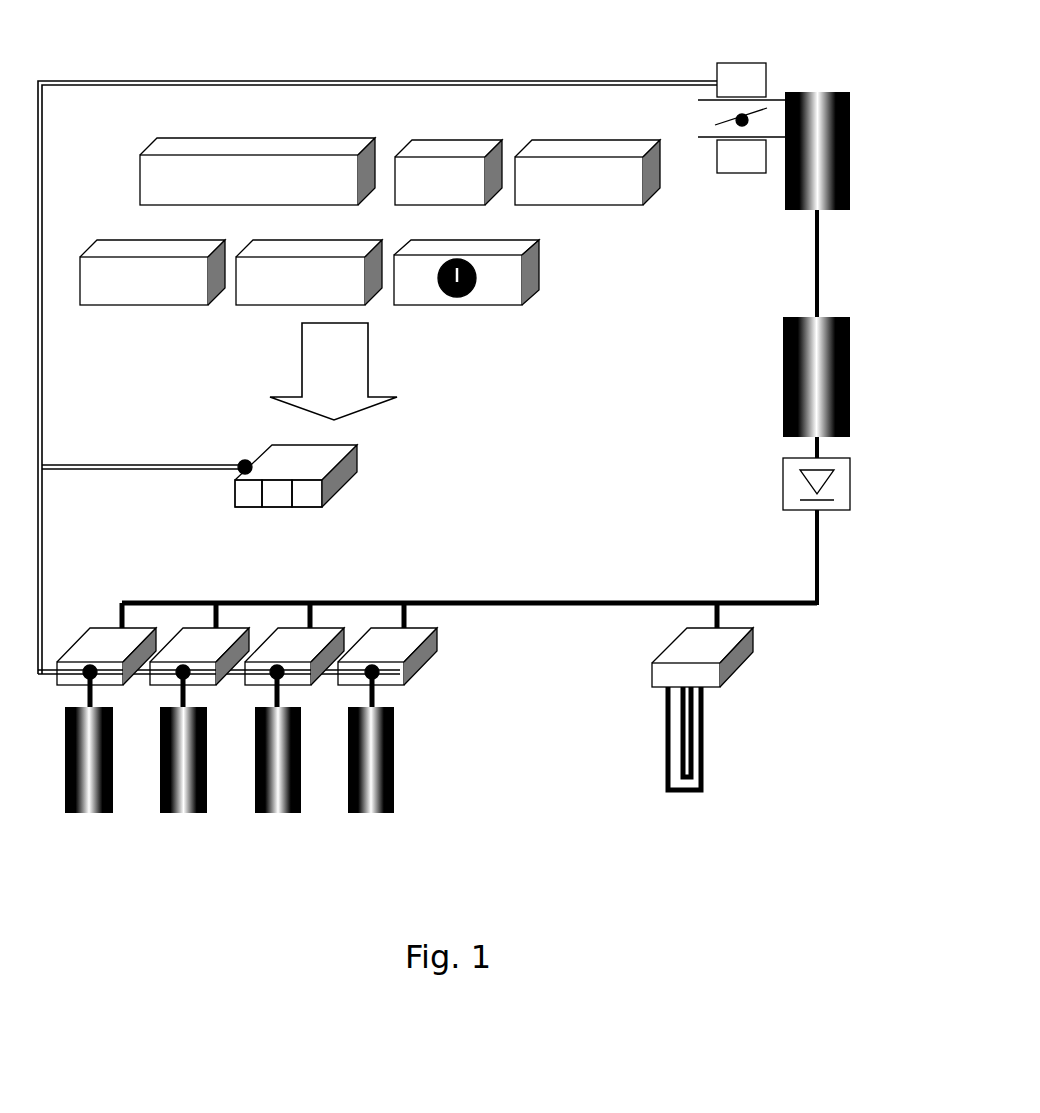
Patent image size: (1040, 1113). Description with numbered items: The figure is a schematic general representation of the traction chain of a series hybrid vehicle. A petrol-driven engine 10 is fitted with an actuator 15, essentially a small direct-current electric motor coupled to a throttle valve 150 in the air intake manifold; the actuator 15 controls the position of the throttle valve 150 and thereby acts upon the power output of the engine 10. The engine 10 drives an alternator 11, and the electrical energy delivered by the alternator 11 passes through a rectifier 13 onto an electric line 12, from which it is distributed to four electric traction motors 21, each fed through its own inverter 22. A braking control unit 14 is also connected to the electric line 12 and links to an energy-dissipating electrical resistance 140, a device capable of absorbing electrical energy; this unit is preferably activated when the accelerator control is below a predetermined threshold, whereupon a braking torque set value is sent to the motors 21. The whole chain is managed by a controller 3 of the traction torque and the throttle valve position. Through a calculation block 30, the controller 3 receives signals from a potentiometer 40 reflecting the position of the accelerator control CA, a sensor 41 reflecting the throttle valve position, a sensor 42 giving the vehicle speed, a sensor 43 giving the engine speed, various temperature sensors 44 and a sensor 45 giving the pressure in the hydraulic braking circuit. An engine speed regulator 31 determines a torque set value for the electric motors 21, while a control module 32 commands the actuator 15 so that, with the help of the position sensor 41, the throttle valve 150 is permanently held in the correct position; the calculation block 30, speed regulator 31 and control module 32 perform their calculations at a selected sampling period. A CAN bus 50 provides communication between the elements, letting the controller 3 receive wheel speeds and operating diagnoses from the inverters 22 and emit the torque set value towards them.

The controller 3 is at (308, 457).
The calculation block 30 is at (246, 510).
The engine speed regulator 31 is at (272, 510).
The control module 32 is at (304, 510).
The petrol-driven engine 10 is at (827, 108).
The alternator 11 is at (826, 325).
The electric line 12 is at (570, 600).
The rectifier 13 is at (826, 528).
The braking control unit 14 is at (735, 662).
The energy-dissipating electrical resistance 140 is at (720, 787).
The actuator 15 is at (740, 60).
The throttle valve 150 is at (718, 115).
The electric traction motors 21 is at (372, 790).
The inverter 22 is at (184, 626).
The potentiometer 40 is at (413, 176).
The sensor 41 is at (749, 176).
The sensor 42 is at (498, 307).
The sensor 43 is at (213, 176).
The temperature sensors 44 is at (118, 307).
The sensor 45 is at (565, 155).
The CAN bus 50 is at (121, 462).